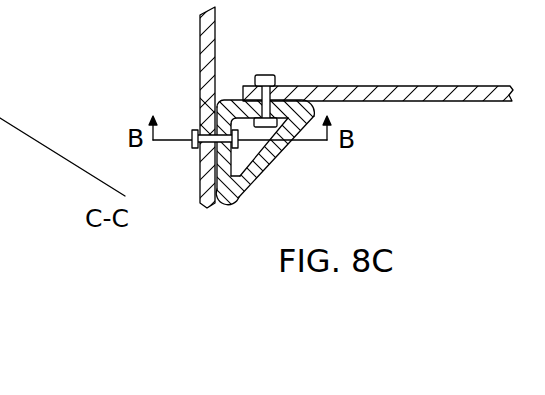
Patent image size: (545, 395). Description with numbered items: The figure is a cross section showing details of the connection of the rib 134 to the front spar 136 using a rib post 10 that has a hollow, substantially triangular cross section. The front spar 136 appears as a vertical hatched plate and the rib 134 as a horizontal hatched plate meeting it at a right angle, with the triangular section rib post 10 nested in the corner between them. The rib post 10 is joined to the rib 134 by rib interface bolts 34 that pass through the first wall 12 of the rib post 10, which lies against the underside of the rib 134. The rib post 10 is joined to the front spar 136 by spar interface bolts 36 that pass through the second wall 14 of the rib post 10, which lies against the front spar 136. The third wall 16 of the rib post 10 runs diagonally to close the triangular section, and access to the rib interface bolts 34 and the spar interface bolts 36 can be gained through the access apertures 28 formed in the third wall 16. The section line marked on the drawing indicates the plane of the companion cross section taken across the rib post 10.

The rib post 10 is at (269, 149).
The first wall 12 is at (237, 100).
The second wall 14 is at (224, 120).
The third wall 16 is at (232, 198).
The access apertures 28 is at (265, 163).
The rib interface bolts 34 is at (270, 74).
The spar interface bolts 36 is at (192, 148).
The rib 134 is at (438, 86).
The front spar 136 is at (200, 33).